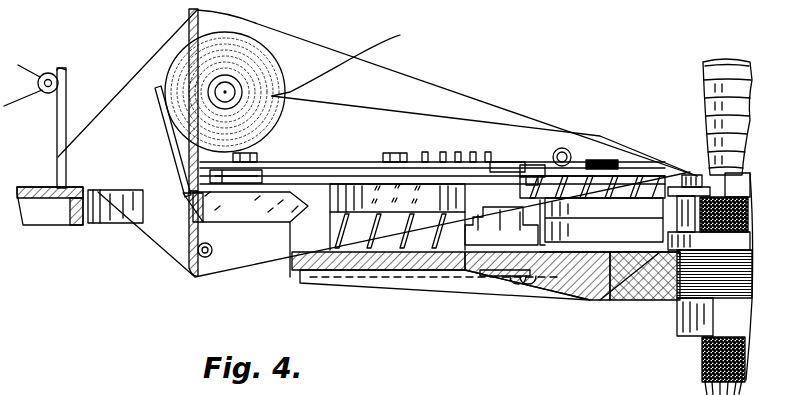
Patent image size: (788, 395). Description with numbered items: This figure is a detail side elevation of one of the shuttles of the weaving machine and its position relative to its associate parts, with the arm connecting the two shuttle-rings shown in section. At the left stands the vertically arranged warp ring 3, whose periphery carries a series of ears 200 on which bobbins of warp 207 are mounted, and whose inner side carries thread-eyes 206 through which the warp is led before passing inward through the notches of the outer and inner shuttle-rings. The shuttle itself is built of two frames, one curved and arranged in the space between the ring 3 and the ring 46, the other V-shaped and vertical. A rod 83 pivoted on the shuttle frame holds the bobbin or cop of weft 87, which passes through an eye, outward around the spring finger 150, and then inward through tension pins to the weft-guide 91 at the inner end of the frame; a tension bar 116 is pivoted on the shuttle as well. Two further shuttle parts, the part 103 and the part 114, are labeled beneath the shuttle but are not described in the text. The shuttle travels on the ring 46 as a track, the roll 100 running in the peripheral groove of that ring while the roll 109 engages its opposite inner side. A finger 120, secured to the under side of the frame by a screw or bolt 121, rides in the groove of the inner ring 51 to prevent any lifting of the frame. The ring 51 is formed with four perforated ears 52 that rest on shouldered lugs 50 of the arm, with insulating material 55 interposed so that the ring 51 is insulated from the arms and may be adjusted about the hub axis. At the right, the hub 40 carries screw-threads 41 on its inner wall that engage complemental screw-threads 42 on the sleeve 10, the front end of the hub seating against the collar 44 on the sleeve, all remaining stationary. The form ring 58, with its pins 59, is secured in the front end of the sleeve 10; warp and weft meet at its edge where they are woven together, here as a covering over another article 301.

The warp ring 3 is at (78, 223).
The sleeve 10 is at (690, 327).
The hub 40 is at (622, 297).
The screw-threads 41 is at (678, 290).
The screw-threads 42 is at (680, 298).
The collar 44 is at (588, 296).
The ring 46 is at (298, 243).
The shouldered lug 50 is at (460, 271).
The ring 51 is at (635, 182).
The perforated ears 52 is at (520, 268).
The insulating material 55 is at (492, 273).
The ring 58 is at (697, 173).
The pins 59 is at (705, 190).
The rod 83 is at (270, 58).
The weft 87 is at (484, 97).
The weft-guide 91 is at (603, 157).
The roll 100 is at (248, 222).
The part 103 is at (400, 390).
The roll 109 is at (423, 205).
The part 114 is at (330, 390).
The tension bar 116 is at (160, 148).
The finger 120 is at (537, 170).
The screw or bolt 121 is at (497, 158).
The spring finger 150 is at (328, 158).
The ears 200 is at (703, 362).
The thread-eyes 206 is at (58, 124).
The warp 207 is at (151, 44).
The article 301 is at (734, 56).